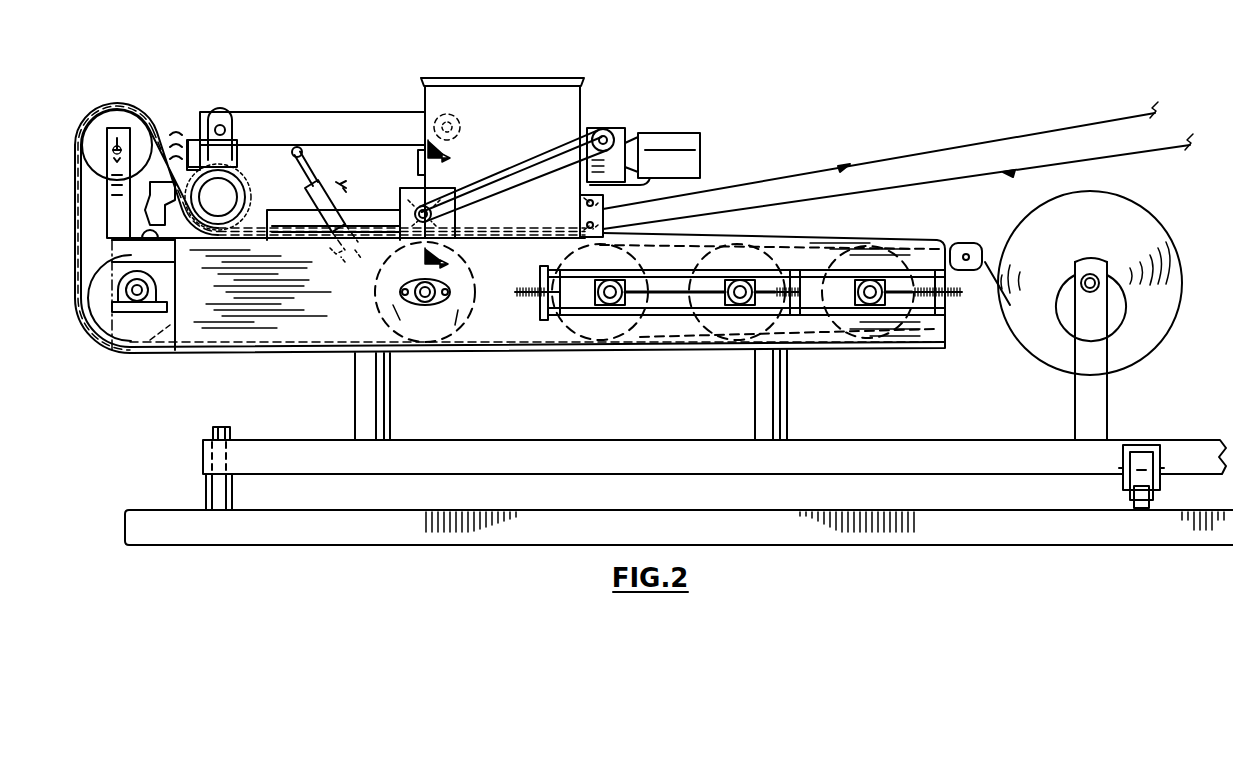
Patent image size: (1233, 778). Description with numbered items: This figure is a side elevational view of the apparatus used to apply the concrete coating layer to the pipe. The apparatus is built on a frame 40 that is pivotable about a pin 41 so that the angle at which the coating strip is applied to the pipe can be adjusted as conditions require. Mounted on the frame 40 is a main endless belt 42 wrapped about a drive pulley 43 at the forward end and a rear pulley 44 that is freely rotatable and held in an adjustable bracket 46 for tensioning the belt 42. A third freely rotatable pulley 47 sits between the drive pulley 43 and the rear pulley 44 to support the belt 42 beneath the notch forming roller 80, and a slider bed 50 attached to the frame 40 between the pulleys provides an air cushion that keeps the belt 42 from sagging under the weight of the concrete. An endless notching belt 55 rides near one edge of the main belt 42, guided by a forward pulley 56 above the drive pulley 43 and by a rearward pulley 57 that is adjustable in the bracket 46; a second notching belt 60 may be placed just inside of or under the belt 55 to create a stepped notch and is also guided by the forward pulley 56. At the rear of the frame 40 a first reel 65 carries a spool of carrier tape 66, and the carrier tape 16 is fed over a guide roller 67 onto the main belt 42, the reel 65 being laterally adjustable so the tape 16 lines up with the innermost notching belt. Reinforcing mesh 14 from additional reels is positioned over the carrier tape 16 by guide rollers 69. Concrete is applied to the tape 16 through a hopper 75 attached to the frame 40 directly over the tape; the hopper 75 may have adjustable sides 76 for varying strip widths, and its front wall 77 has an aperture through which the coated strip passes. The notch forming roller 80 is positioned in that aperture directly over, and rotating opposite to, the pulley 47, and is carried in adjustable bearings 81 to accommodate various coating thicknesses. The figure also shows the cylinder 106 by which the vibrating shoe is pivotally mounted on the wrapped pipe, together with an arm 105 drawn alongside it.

The reinforcing mesh 14 is at (975, 178).
The carrier tape 16 is at (925, 237).
The frame 40 is at (529, 405).
The pin 41 is at (228, 431).
The main endless belt 42 is at (122, 260).
The drive pulley 43 is at (103, 318).
The rear pulley 44 is at (630, 330).
The adjustable bracket 46 is at (540, 308).
The third freely rotatable pulley 47 is at (445, 350).
The slider bed 50 is at (276, 245).
The notching belt 55 is at (700, 232).
The forward pulley 56 is at (123, 111).
The rearward pulley 57 is at (865, 340).
The second notching belt 60 is at (710, 240).
The first reel 65 is at (1078, 403).
The spool of carrier tape 66 is at (1135, 215).
The guide roller 67 is at (972, 278).
The guide rollers 69 is at (583, 205).
The hopper 75 is at (508, 78).
The adjustable sides 76 is at (568, 99).
The front wall 77 is at (424, 100).
The notch forming roller 80 is at (413, 200).
The adjustable bearings 81 is at (445, 214).
The arm 105 is at (290, 117).
The cylinder 106 is at (307, 190).